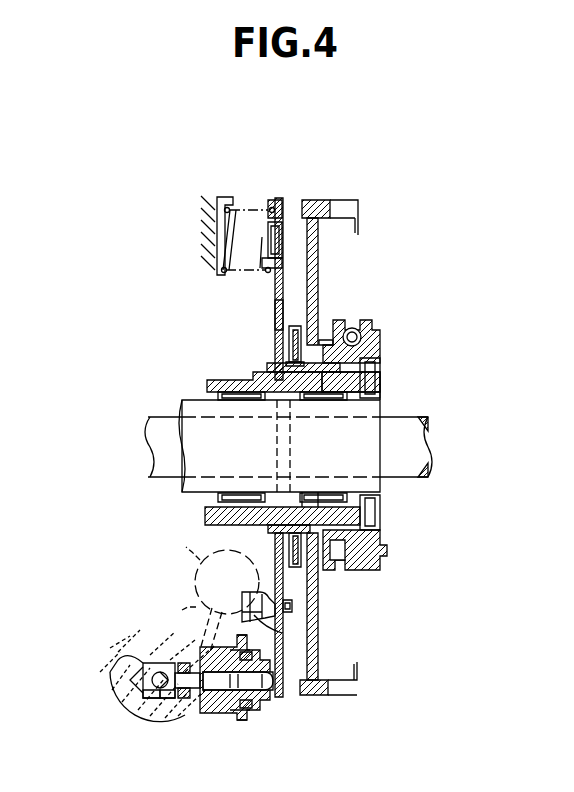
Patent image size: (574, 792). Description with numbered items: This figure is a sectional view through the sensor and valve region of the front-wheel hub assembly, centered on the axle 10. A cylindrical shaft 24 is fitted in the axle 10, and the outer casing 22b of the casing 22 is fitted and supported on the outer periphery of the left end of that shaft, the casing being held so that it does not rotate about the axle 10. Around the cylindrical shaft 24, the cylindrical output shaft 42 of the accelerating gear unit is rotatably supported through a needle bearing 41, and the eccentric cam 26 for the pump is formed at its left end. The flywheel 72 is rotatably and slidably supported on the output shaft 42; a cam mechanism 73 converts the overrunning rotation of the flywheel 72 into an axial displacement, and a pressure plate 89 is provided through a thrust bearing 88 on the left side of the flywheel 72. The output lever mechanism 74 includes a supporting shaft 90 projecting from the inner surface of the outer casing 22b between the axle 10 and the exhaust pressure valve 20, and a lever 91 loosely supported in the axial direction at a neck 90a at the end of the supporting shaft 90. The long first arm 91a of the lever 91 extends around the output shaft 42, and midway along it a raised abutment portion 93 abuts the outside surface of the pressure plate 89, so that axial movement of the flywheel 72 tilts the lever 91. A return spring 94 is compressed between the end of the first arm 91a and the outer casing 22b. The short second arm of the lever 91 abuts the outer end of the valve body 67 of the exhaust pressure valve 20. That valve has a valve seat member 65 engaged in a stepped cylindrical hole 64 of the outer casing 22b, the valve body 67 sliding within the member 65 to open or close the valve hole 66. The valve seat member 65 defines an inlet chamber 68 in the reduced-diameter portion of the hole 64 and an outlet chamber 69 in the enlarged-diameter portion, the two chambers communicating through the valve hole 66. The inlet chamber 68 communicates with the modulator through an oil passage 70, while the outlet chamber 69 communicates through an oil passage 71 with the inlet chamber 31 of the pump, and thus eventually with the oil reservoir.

The axle 10 is at (407, 425).
The exhaust pressure valve 20 is at (198, 712).
The casing 22 is at (215, 236).
The outer casing 22b is at (118, 686).
The cylindrical shaft 24 is at (196, 405).
The eccentric cam 26 is at (230, 378).
The inlet chamber 31 is at (208, 556).
The needle bearing 41 is at (318, 396).
The output shaft 42 is at (296, 440).
The stepped cylindrical hole 64 is at (155, 700).
The valve seat member 65 is at (175, 700).
The valve hole 66 is at (178, 668).
The valve body 67 is at (262, 692).
The inlet chamber 68 is at (152, 668).
The outlet chamber 69 is at (215, 712).
The oil passage 70 is at (135, 676).
The oil passage 71 is at (212, 625).
The flywheel 72 is at (326, 206).
The cam mechanism 73 is at (354, 318).
The output lever mechanism 74 is at (293, 185).
The thrust bearing 88 is at (322, 338).
The pressure plate 89 is at (294, 324).
The supporting shaft 90 is at (282, 633).
The neck 90a is at (292, 605).
The lever 91 is at (276, 297).
The first arm 91a is at (276, 322).
The abutment portion 93 is at (277, 445).
The return spring 94 is at (272, 207).